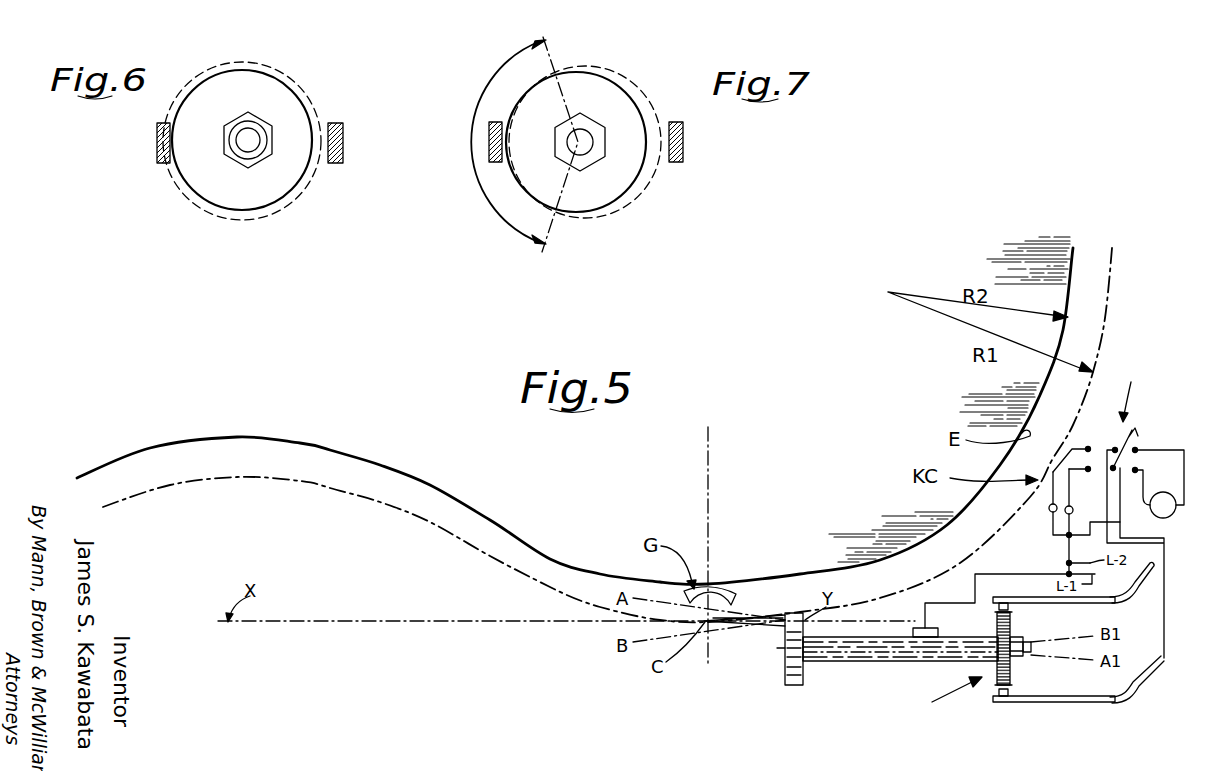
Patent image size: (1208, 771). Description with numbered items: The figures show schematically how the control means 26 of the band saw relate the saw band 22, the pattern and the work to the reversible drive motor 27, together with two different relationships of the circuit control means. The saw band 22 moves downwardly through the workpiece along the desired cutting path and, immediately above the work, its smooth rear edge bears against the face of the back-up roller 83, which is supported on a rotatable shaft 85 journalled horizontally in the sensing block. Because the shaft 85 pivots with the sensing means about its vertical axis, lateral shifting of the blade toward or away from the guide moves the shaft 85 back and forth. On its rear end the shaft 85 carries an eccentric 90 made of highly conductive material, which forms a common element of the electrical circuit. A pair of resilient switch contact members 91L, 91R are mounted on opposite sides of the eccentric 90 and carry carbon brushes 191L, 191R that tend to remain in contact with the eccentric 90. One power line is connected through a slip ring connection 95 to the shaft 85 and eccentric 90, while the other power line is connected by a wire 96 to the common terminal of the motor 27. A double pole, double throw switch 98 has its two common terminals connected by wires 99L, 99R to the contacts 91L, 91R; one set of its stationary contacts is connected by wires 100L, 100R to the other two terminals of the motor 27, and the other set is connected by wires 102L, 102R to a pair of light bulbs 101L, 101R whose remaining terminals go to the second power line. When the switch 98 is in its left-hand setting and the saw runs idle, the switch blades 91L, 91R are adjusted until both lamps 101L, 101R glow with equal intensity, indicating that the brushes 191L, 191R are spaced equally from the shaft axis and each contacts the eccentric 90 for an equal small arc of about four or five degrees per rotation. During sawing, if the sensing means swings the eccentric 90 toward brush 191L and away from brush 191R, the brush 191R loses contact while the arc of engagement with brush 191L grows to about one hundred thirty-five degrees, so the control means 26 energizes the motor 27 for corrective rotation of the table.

In FIG. 5, the saw band 22 is at (743, 624).
In FIG. 5, the control means 26 is at (937, 699).
In FIG. 5, the reversible drive motor 27 is at (1148, 505).
In FIG. 5, the back-up roller 83 is at (797, 682).
In FIG. 6, the rotatable shaft 85 is at (250, 134).
In FIG. 7, the rotatable shaft 85 is at (595, 137).
In FIG. 5, the rotatable shaft 85 is at (848, 662).
In FIG. 6, the eccentric 90 is at (279, 178).
In FIG. 7, the eccentric 90 is at (603, 185).
In FIG. 5, the eccentric 90 is at (1010, 678).
In FIG. 5, the switch contact member 91L is at (1043, 597).
In FIG. 5, the switch contact member 91R is at (1033, 702).
In FIG. 5, the slip ring connection 95 is at (936, 630).
In FIG. 5, the wire 96 is at (1140, 522).
In FIG. 5, the double pole, double throw switch 98 is at (1137, 390).
In FIG. 5, the wire 99L is at (1137, 581).
In FIG. 5, the wire 99R is at (1134, 684).
In FIG. 5, the wire 100L is at (1157, 450).
In FIG. 5, the wire 100R is at (1152, 474).
In FIG. 5, the light bulb 101L is at (1050, 512).
In FIG. 5, the light bulb 101R is at (1066, 515).
In FIG. 5, the wire 102L is at (1073, 449).
In FIG. 5, the wire 102R is at (1075, 479).
In FIG. 6, the carbon brush 191L is at (162, 164).
In FIG. 7, the carbon brush 191L is at (495, 162).
In FIG. 5, the carbon brush 191L is at (1008, 606).
In FIG. 6, the contact element 191R is at (343, 128).
In FIG. 7, the contact element 191R is at (683, 155).
In FIG. 5, the contact element 191R is at (997, 698).